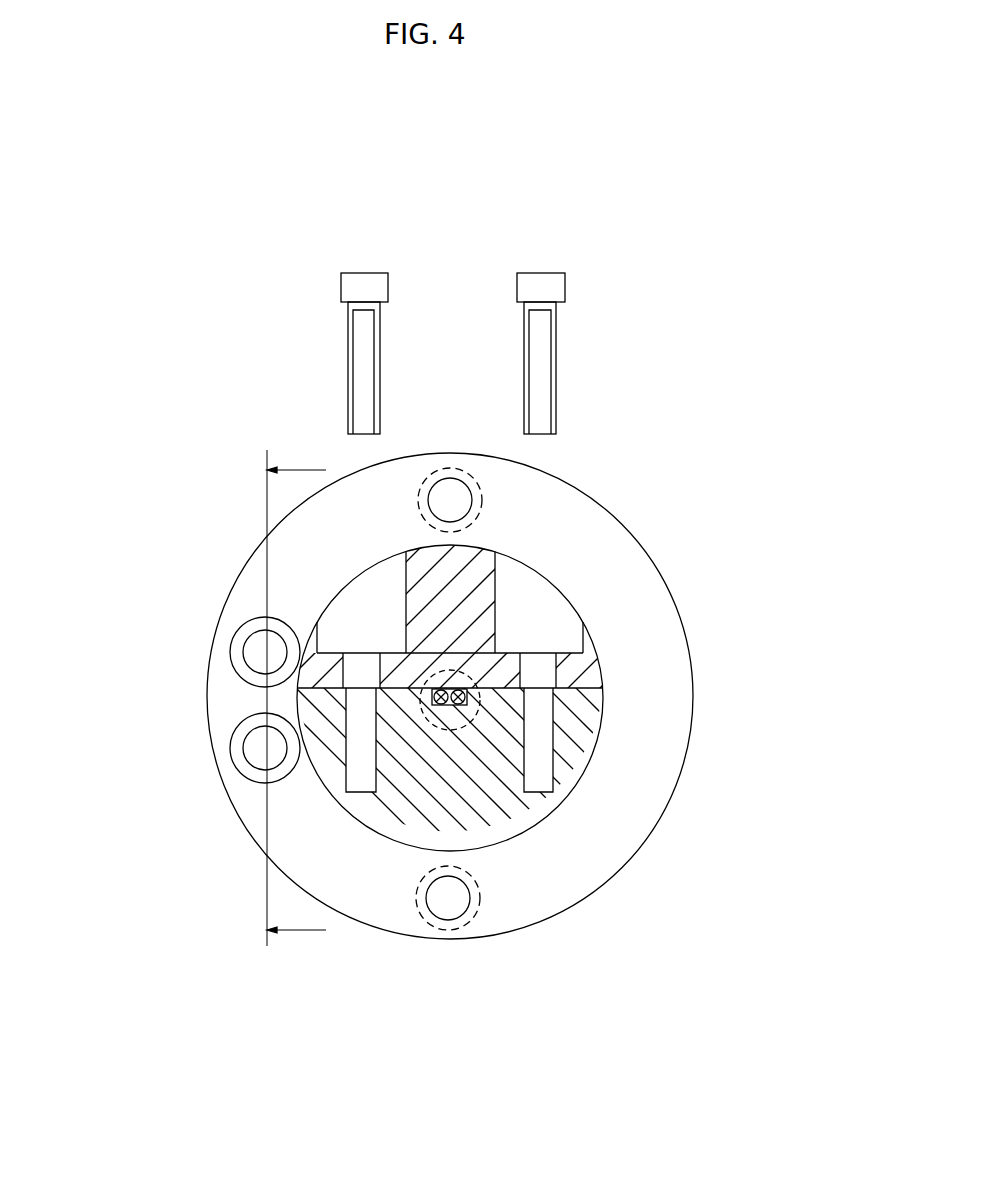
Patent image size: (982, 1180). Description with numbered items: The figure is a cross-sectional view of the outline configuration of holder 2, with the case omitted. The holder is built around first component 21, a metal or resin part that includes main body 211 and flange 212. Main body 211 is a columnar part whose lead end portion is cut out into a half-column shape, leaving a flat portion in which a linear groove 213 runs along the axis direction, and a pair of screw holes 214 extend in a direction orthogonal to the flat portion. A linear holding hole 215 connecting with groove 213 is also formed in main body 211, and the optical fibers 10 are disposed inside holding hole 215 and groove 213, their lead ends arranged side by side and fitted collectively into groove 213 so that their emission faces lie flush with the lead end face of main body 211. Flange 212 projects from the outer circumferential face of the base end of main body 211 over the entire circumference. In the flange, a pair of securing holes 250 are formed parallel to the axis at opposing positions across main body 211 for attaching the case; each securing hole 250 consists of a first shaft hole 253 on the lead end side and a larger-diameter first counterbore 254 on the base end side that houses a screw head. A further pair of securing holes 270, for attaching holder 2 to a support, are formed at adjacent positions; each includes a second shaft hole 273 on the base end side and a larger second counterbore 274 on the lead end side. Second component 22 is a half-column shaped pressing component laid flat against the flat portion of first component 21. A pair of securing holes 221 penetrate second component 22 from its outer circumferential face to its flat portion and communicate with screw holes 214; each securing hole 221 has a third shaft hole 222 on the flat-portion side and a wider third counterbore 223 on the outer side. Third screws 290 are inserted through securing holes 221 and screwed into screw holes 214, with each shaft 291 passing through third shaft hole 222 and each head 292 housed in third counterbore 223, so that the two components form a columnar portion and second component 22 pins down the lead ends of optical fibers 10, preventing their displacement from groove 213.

The holder 2 is at (150, 450).
The optical fiber 10 is at (433, 691).
The first component 21 is at (615, 877).
The main body 211 is at (400, 818).
The flange 212 is at (634, 763).
The groove 213 is at (345, 792).
The screw hole 214 is at (358, 768).
The holding hole 215 is at (480, 713).
The second component 22 is at (486, 545).
The securing hole 221 is at (332, 620).
The third shaft hole 222 is at (538, 673).
The third counterbore 223 is at (538, 627).
The securing hole 250 is at (468, 498).
The first shaft hole 253 is at (446, 900).
The first counterbore 254 is at (460, 931).
The securing hole 270 is at (253, 651).
The second shaft hole 273 is at (248, 748).
The second counterbore 274 is at (241, 758).
The third screw 290 is at (553, 284).
The shaft 291 is at (350, 330).
The head 292 is at (352, 283).